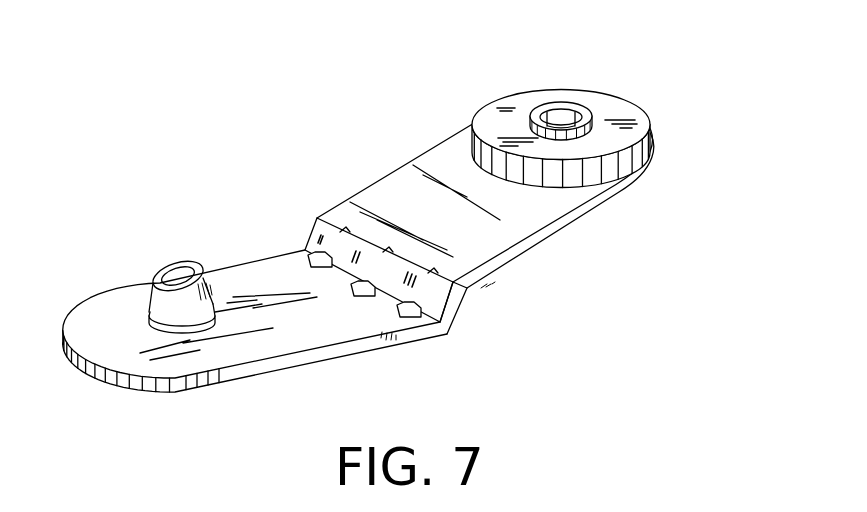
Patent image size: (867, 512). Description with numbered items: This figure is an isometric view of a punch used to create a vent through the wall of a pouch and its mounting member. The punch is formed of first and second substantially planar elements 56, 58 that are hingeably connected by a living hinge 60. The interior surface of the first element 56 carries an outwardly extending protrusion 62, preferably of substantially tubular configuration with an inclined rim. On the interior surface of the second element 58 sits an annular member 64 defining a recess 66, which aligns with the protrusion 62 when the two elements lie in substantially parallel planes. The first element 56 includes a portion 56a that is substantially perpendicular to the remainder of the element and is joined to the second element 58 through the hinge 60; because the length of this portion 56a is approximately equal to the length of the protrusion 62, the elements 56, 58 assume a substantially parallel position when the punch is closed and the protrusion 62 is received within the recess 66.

The first planar element 56 is at (287, 270).
The perpendicular portion of element 56 56a is at (450, 312).
The second planar element 58 is at (440, 153).
The living hinge 60 is at (317, 217).
The protrusion 62 is at (173, 268).
The annular member 64 is at (627, 113).
The recess 66 is at (557, 115).